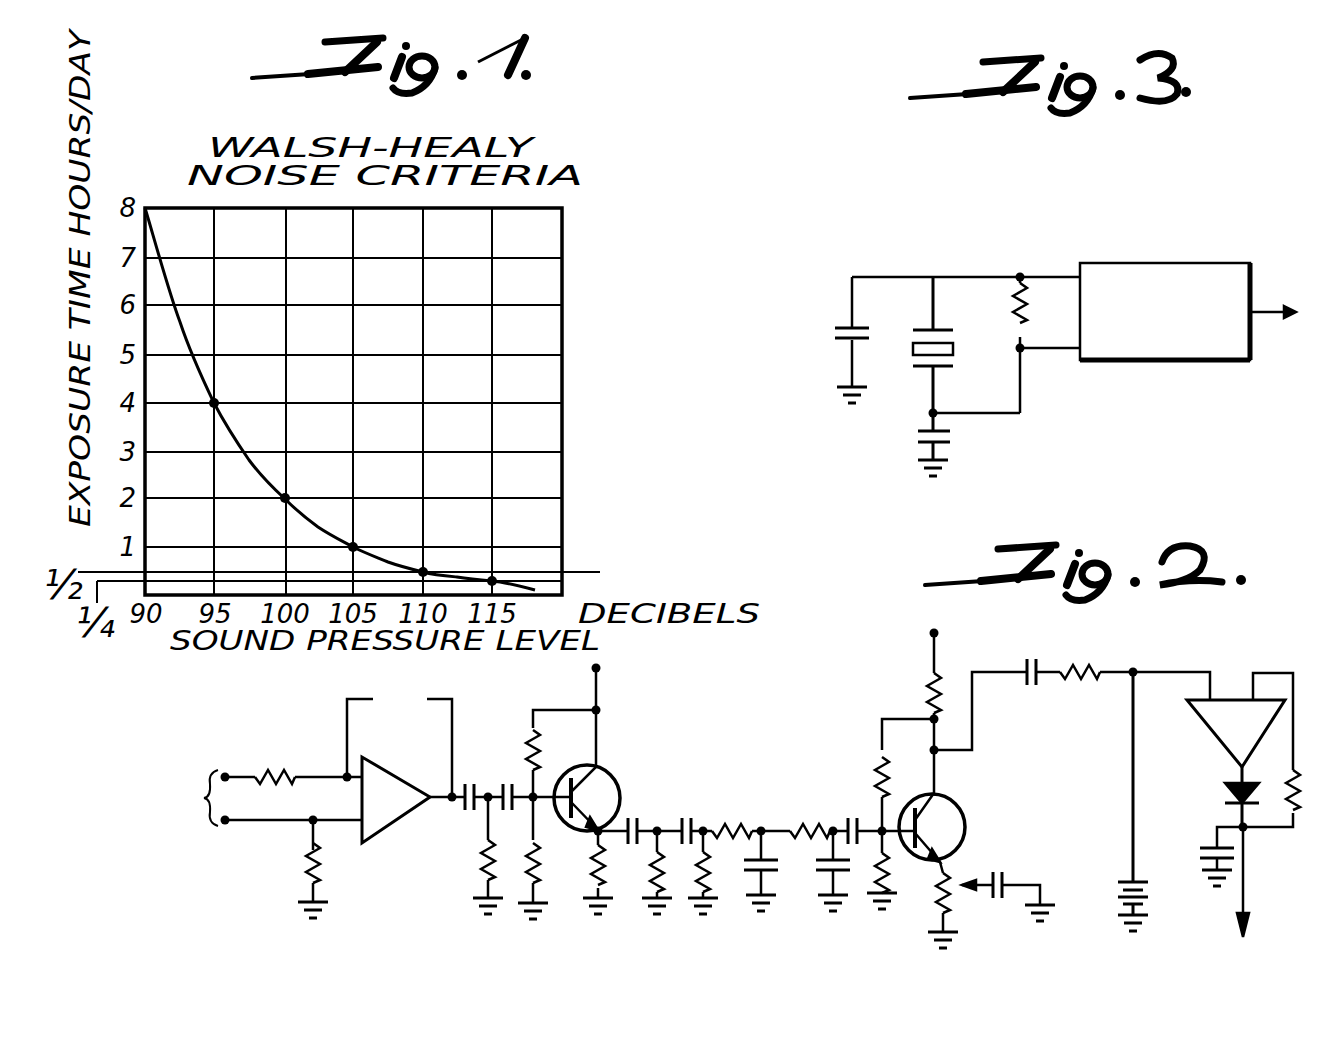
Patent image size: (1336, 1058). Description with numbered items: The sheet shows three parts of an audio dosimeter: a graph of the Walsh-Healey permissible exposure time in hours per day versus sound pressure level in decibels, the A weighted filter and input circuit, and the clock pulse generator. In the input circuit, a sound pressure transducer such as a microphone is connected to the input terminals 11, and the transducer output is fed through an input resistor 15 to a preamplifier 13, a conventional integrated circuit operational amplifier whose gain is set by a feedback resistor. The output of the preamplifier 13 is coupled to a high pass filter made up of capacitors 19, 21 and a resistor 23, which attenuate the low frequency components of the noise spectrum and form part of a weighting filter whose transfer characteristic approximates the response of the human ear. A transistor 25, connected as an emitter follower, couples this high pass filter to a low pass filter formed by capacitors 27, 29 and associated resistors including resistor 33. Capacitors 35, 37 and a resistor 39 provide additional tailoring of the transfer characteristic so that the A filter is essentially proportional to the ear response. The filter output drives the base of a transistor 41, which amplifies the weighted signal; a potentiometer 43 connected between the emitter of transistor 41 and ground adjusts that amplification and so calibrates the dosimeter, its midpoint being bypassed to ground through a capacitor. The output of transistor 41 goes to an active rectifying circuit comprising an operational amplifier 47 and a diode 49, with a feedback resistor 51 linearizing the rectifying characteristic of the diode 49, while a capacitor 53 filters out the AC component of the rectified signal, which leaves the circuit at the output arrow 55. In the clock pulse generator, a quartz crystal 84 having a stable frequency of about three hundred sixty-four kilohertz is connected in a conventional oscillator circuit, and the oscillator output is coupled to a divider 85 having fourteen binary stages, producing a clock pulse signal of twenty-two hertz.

In FIG. 2, the input terminals 11 is at (202, 798).
In FIG. 2, the preamplifier 13 is at (398, 811).
In FIG. 2, the input resistor 15 is at (286, 777).
In FIG. 2, the capacitor 19 is at (469, 780).
In FIG. 2, the capacitor 21 is at (512, 772).
In FIG. 2, the resistor 23 is at (480, 858).
In FIG. 2, the transistor 25 is at (612, 778).
In FIG. 2, the capacitor 27 is at (640, 818).
In FIG. 2, the capacitor 29 is at (696, 818).
In FIG. 2, the resistor 33 is at (730, 888).
In FIG. 2, the capacitor 35 is at (786, 886).
In FIG. 2, the capacitor 37 is at (858, 886).
In FIG. 2, the resistor 39 is at (812, 828).
In FIG. 2, the transistor 41 is at (957, 814).
In FIG. 2, the potentiometer 43 is at (938, 892).
In FIG. 2, the operational amplifier 47 is at (1250, 735).
In FIG. 2, the diode 49 is at (1226, 790).
In FIG. 2, the feedback resistor 51 is at (1286, 790).
In FIG. 2, the capacitor 53 is at (1202, 852).
In FIG. 2, the output 55 is at (1247, 898).
In FIG. 3, the quartz crystal 84 is at (912, 342).
In FIG. 3, the divider 85 is at (1176, 319).